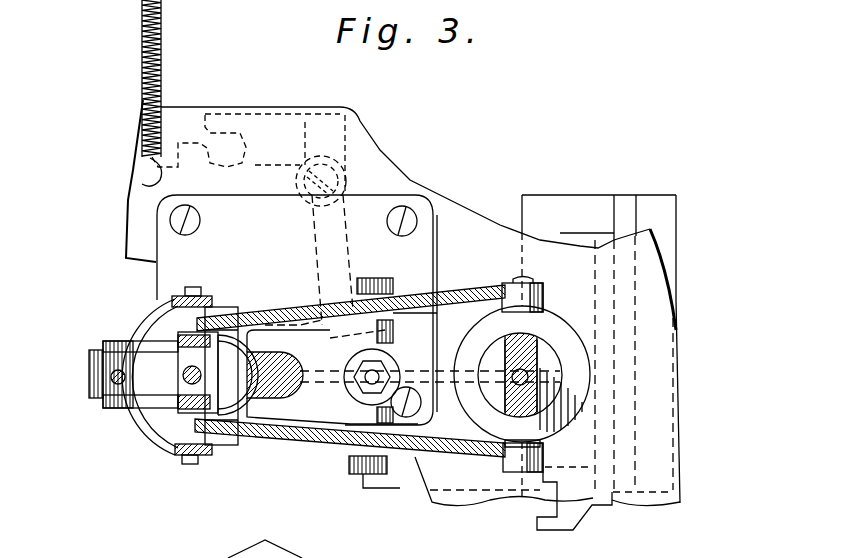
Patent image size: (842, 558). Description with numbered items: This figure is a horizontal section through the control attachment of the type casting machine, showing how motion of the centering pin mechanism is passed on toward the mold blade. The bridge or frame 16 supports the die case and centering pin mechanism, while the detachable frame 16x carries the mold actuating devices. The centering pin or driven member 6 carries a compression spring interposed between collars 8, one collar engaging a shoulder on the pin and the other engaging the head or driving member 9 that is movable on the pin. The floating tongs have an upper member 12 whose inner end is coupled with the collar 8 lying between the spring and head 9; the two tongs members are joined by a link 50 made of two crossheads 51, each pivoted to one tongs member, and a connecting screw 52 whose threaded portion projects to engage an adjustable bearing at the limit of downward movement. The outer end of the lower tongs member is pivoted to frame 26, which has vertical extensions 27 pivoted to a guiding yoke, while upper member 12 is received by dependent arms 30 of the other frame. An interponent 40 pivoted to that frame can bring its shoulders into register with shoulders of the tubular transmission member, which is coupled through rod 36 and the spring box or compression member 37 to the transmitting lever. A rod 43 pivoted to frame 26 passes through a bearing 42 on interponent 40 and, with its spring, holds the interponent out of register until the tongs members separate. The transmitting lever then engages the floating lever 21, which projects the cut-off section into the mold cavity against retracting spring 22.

The retracting spring 22 is at (164, 84).
The floating lever 21 is at (268, 226).
The bridge or frame 16 is at (462, 212).
The detachable frame 16x is at (432, 282).
The frame 26 is at (133, 324).
The dependent arms 30 is at (170, 310).
The vertical extensions 27 is at (212, 312).
The bearing 42 is at (110, 387).
The rod 43 is at (112, 374).
The interponent 40 is at (183, 372).
The rod 36 is at (200, 371).
The spring box or compression member 37 is at (158, 410).
The upper member of floating tongs 12 is at (300, 307).
The link 50 is at (403, 368).
The crossheads 51 is at (387, 358).
The connecting screw 52 is at (388, 377).
The collars 8 is at (547, 321).
The head or driving member 9 is at (530, 397).
The centering pin or driven member 6 is at (523, 378).